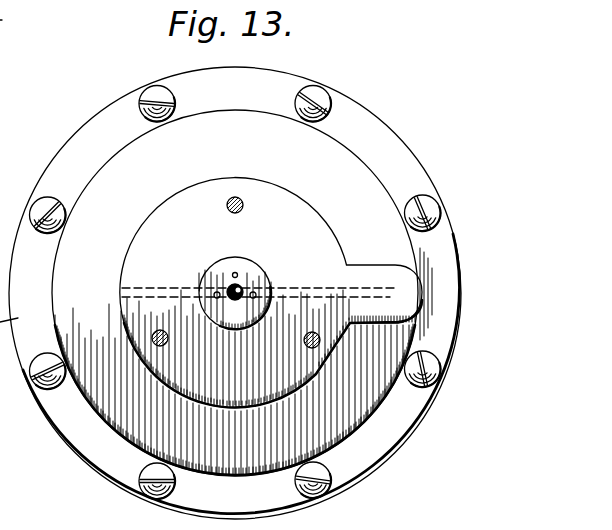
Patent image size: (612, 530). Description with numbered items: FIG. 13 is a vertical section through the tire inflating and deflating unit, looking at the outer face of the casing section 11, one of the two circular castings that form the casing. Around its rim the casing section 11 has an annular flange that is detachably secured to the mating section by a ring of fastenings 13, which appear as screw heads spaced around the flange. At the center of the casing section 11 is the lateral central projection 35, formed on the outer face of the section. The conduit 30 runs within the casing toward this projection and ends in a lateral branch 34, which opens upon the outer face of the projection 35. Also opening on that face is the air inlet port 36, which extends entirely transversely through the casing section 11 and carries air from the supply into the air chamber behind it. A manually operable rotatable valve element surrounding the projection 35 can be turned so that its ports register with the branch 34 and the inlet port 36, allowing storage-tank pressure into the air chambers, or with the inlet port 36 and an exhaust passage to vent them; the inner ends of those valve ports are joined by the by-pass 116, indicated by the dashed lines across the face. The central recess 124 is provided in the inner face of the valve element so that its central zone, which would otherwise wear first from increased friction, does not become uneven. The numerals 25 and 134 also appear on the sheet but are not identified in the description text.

The casing cover ring 11 is at (338, 168).
The screws 13 is at (150, 87).
The slot recess 30 is at (388, 292).
The shaft 116 is at (200, 261).
The hub boss 124 is at (262, 284).
The pivot pin 36 is at (236, 272).
The pin 34 is at (254, 299).
The pin 35 is at (226, 320).
The member 25 is at (11, 187).
The member 134 is at (16, 20).